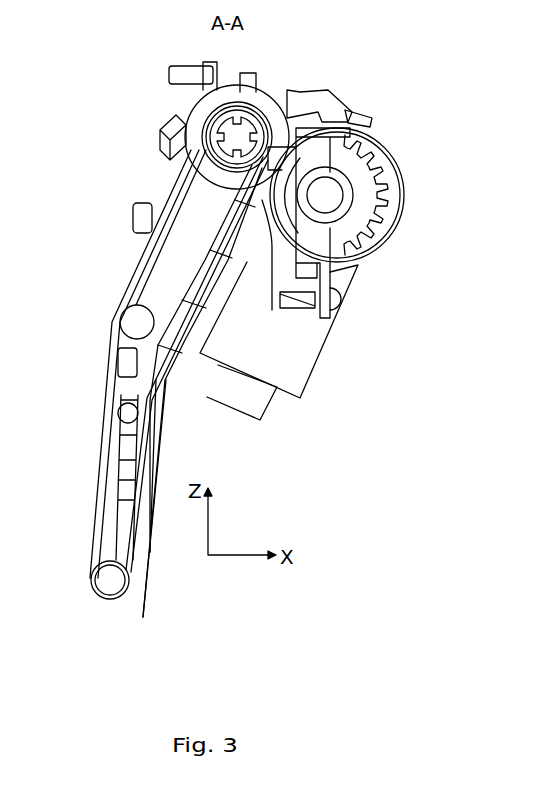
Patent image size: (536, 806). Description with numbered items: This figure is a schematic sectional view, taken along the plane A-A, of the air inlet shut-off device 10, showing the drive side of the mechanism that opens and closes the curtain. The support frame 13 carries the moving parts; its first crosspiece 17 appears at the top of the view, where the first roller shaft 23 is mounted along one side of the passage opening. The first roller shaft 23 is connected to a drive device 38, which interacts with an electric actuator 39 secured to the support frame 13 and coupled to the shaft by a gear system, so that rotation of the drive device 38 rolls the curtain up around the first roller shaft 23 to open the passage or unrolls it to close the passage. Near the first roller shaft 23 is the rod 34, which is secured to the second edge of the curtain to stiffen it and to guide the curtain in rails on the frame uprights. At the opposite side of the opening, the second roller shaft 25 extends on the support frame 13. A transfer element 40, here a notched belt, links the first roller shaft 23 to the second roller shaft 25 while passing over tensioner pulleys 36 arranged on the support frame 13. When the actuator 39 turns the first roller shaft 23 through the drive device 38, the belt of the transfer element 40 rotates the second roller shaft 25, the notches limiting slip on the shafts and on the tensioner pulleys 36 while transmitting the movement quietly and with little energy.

The air inlet shut-off device 10 is at (104, 156).
The support frame 13 is at (170, 460).
The first crosspiece 17 is at (270, 96).
The first roller shaft 23 is at (188, 118).
The second roller shaft 25 is at (110, 583).
The rod 34 is at (158, 136).
The tensioner pulleys 36 is at (133, 324).
The drive device 38 is at (385, 245).
The electric actuator 39 is at (305, 366).
The transfer element 40 is at (122, 284).